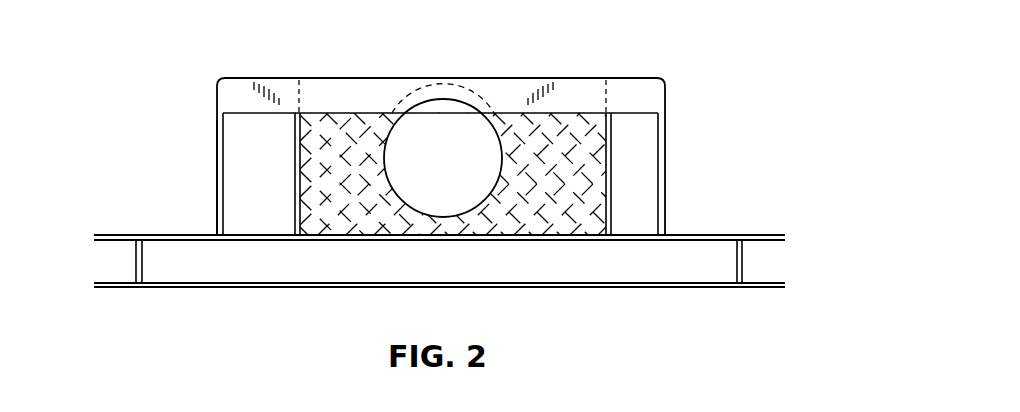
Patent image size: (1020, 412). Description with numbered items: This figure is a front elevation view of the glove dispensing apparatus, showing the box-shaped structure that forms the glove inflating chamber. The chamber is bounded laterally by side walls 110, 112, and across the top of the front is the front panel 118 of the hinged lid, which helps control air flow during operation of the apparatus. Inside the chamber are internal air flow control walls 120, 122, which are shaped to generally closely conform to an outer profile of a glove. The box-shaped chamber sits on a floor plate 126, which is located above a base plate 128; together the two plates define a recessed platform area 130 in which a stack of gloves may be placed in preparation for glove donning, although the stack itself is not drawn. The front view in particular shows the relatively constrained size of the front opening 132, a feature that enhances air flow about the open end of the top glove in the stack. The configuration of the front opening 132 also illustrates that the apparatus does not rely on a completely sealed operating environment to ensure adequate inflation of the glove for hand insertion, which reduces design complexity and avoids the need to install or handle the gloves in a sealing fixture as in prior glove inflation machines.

The side wall 110 is at (667, 111).
The side wall 112 is at (217, 143).
The front panel 118 is at (583, 87).
The internal air flow control wall 120 is at (294, 178).
The internal air flow control wall 122 is at (611, 146).
The floor plate 126 is at (765, 235).
The base plate 128 is at (755, 288).
The recessed platform area 130 is at (688, 272).
The front opening 132 is at (400, 208).